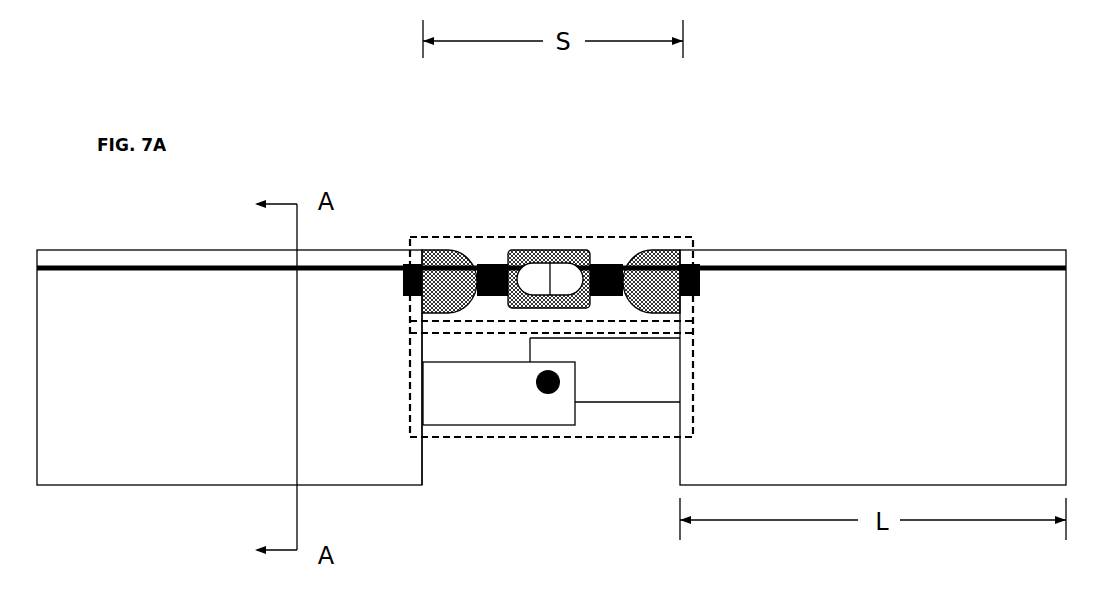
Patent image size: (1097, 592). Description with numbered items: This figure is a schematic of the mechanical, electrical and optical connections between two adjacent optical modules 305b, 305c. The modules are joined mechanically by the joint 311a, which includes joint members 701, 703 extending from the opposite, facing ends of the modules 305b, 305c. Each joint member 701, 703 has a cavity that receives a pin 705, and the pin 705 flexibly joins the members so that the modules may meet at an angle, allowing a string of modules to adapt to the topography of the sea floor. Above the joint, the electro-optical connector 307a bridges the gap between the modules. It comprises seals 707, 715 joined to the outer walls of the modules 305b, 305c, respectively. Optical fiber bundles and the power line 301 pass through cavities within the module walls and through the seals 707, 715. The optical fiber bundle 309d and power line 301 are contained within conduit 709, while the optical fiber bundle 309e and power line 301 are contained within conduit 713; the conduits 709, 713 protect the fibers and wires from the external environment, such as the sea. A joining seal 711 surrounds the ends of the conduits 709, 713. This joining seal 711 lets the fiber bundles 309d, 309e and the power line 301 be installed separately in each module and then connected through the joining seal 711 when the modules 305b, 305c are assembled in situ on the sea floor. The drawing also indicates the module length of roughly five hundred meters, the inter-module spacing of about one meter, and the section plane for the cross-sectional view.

The power line 301 is at (353, 264).
The optical module 305b is at (106, 251).
The optical module 305c is at (968, 248).
The electro-optical connector 307a is at (597, 226).
The optical fiber bundle 309d is at (403, 279).
The optical fiber bundle 309e is at (700, 283).
The joint 311a is at (583, 452).
The joint member 701 is at (492, 426).
The joint member 703 is at (637, 404).
The pin 705 is at (547, 394).
The seal 707 is at (436, 247).
The conduit 709 is at (487, 253).
The joining seal 711 is at (547, 248).
The conduit 713 is at (610, 263).
The seal 715 is at (664, 250).